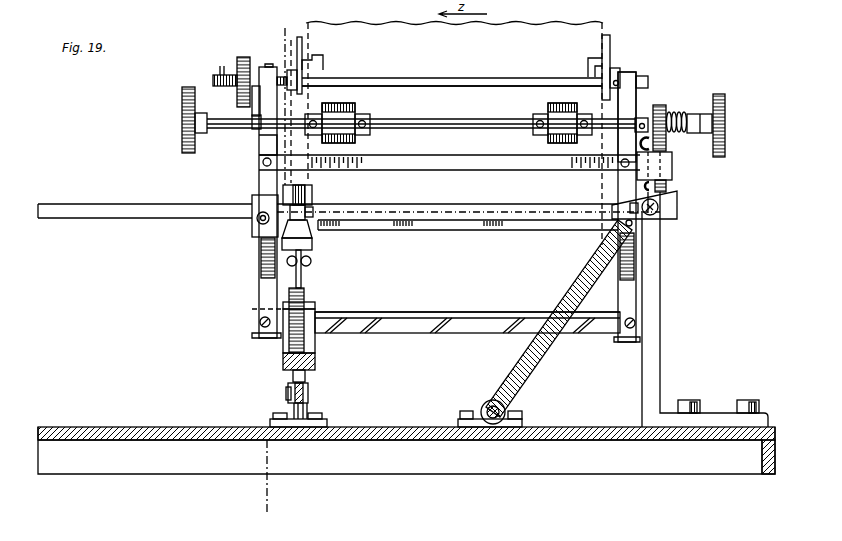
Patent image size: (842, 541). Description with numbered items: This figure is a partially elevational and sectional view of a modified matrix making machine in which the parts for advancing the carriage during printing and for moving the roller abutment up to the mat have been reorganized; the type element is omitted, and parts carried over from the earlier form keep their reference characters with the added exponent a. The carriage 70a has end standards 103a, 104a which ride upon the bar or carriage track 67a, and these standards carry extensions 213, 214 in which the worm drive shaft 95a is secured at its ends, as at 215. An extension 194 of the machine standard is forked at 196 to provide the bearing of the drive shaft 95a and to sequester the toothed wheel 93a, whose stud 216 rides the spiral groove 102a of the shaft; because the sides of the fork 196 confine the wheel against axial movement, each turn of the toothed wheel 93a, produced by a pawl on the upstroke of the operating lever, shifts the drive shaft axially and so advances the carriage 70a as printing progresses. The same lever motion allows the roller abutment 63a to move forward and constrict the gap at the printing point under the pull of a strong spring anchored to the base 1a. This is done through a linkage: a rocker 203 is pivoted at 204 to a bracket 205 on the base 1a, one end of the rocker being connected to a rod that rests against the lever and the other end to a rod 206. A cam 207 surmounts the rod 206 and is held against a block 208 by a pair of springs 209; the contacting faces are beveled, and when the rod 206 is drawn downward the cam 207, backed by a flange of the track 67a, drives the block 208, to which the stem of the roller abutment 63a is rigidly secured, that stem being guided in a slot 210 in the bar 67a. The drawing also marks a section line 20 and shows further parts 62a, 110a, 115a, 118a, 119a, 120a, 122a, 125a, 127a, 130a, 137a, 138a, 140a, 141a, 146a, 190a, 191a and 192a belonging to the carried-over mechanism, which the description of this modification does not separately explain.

The base 1a is at (171, 421).
The section line 20- 20 is at (296, 29).
The slide plate 62a is at (606, 32).
The roller abutment 63a is at (312, 203).
The bar or carriage track 67a is at (443, 201).
The carriage 70a is at (486, 73).
The toothed wheel 93a is at (305, 291).
The worm drive shaft 95a is at (420, 312).
The spiral groove 102a is at (462, 312).
The end standard 103a is at (320, 70).
The end standard 104a is at (637, 80).
The scale bar 110a is at (430, 155).
The sleeve 115a is at (357, 107).
The gear 118a is at (182, 133).
The gear 119a is at (730, 92).
The pinion 120a is at (663, 105).
The spring 122a is at (687, 117).
The collar 125a is at (252, 117).
The lever 127a is at (678, 210).
The housing block 130a is at (673, 175).
The cam 137a is at (655, 216).
The rail 138a is at (522, 77).
The screw 140a is at (222, 75).
The gear 141a is at (249, 47).
The bracket 146a is at (608, 68).
The pivot hub 190a is at (487, 405).
The pedestal 191a is at (530, 420).
The link bar 192a is at (575, 282).
The extension 194 is at (284, 360).
The fork 196 is at (316, 305).
The rocker 203 is at (287, 394).
The pivot 204 is at (309, 394).
The bracket 205 is at (310, 410).
The rod 206 is at (308, 378).
The cam 207 is at (318, 232).
The block 208 is at (316, 244).
The springs 209 is at (309, 265).
The slot 210 is at (310, 213).
The extension 213 is at (258, 280).
The extension 214 is at (632, 292).
The shaft securing point 215 is at (263, 327).
The stud 216 is at (316, 340).